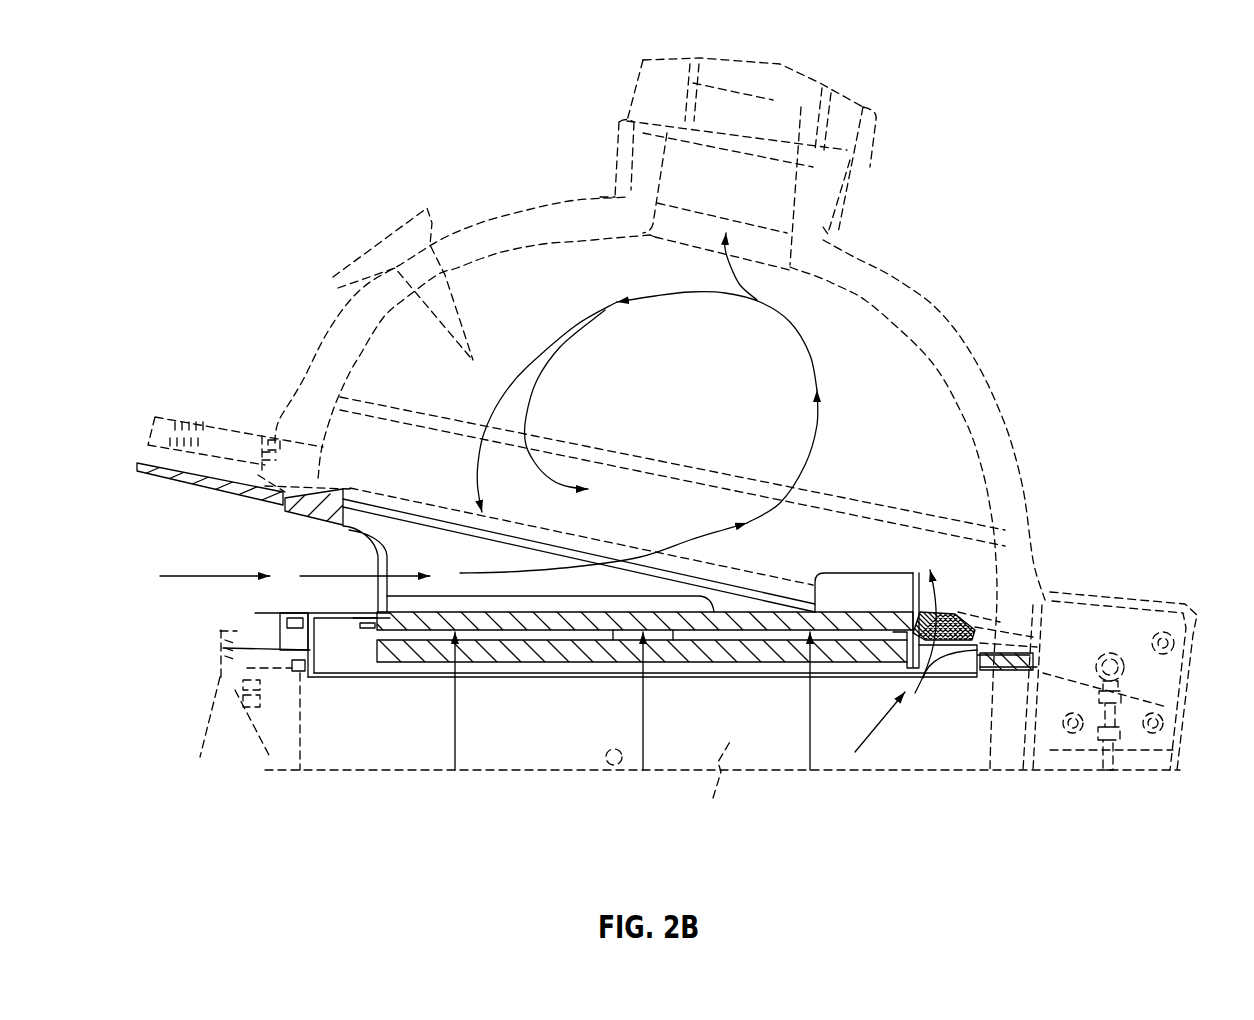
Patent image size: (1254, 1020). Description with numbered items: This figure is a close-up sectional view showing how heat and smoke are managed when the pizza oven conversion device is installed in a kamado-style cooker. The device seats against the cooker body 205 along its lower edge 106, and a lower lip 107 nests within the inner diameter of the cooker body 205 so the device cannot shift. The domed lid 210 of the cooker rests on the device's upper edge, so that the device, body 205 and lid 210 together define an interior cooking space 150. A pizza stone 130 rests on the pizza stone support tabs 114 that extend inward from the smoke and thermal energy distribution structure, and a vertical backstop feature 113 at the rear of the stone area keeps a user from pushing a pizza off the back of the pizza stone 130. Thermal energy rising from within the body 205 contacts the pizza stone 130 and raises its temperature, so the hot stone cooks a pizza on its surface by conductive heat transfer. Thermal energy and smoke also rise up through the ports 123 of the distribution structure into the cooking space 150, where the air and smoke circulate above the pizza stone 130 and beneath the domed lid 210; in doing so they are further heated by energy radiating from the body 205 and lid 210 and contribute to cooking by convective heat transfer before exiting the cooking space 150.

The lower edge 106 is at (272, 646).
The lower lip 107 is at (317, 647).
The vertical backstop feature 113 is at (843, 590).
The pizza stone support tabs 114 is at (390, 668).
The ports 123 is at (972, 624).
The pizza stone 130 is at (520, 617).
The cooking space 150 is at (714, 398).
The body 205 is at (325, 771).
The domed lid 210 is at (937, 312).